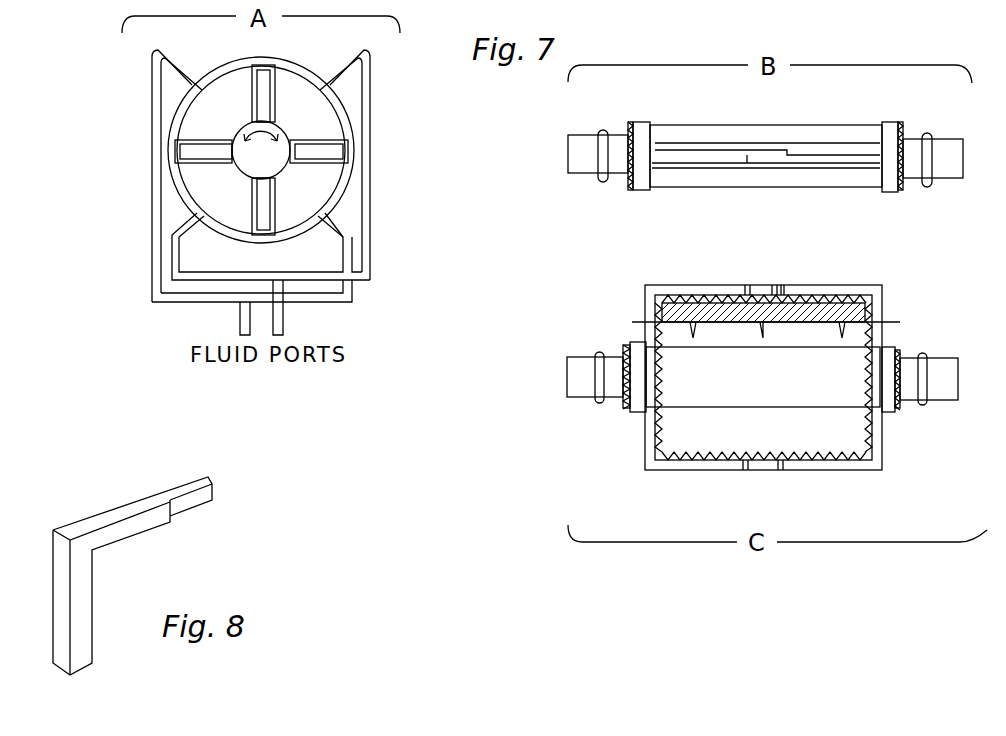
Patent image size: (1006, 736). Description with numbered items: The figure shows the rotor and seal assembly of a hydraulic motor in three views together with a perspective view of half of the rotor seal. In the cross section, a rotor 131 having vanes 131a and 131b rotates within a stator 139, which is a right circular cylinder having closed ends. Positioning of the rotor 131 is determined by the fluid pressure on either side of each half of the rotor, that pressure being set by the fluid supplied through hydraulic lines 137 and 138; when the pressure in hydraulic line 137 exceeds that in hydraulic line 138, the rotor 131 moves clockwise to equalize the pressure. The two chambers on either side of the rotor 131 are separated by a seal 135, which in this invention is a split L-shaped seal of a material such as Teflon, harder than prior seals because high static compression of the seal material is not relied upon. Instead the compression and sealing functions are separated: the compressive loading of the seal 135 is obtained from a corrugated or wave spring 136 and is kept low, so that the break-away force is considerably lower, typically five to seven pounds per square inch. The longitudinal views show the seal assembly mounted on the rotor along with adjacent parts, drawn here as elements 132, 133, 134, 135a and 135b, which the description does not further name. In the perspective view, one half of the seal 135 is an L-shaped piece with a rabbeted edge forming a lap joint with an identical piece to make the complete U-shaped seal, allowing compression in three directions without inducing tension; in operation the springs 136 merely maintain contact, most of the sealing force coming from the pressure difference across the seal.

In FIG. 7, the rotor 131 is at (238, 127).
In FIG. 7, the vane 131a is at (252, 80).
In FIG. 7, the vane 131b is at (252, 196).
In FIG. 7, the sealing ring 132 is at (603, 130).
In FIG. 7, the knurled collar 133 is at (630, 190).
In FIG. 7, the end flange 134 is at (641, 122).
In FIG. 7, the seal 135 is at (267, 66).
In FIG. 8, the seal 135 is at (73, 520).
In FIG. 7, the vane plate 135a is at (717, 157).
In FIG. 7, the vane plate 135b is at (826, 150).
In FIG. 7, the corrugated or wave spring 136 is at (767, 294).
In FIG. 7, the hydraulic line 137 is at (158, 51).
In FIG. 7, the hydraulic line 138 is at (363, 55).
In FIG. 7, the stator 139 is at (226, 63).